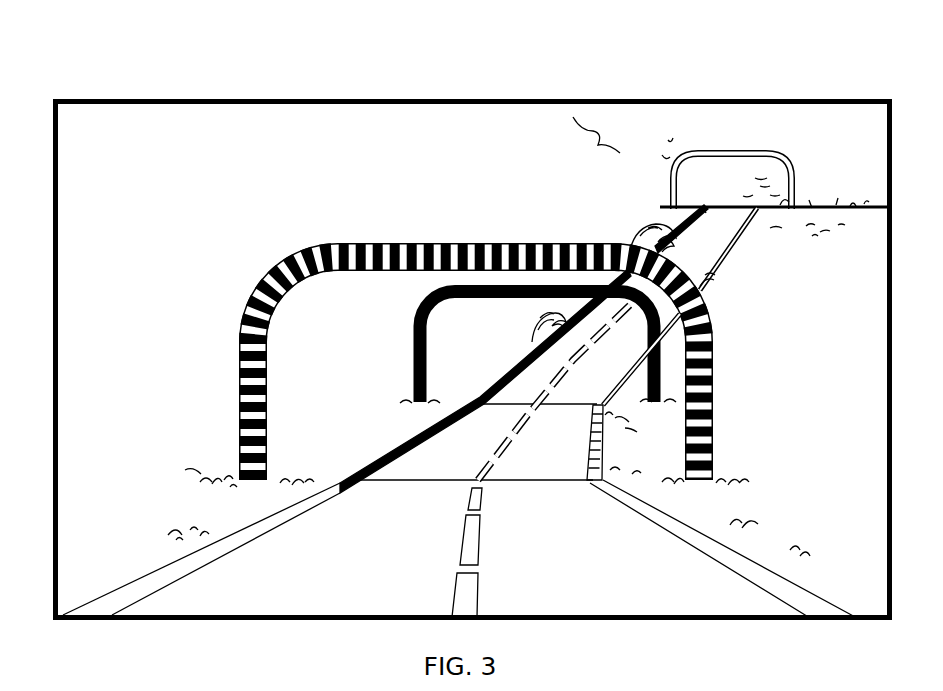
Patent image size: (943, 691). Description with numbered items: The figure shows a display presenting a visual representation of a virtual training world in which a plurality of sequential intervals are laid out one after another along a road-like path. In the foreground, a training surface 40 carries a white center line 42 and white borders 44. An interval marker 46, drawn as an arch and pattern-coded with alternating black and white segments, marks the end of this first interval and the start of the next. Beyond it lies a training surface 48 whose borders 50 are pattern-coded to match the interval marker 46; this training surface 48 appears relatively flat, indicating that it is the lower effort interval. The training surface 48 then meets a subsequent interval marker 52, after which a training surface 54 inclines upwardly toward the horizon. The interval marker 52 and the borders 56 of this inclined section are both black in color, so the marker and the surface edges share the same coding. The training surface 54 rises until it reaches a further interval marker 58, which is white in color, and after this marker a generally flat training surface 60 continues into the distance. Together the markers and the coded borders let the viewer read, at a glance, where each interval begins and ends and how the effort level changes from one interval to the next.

The training surface 40 is at (188, 600).
The white center line 42 is at (450, 593).
The white borders 44 is at (113, 600).
The interval marker 46 is at (383, 243).
The training surface 48 is at (473, 450).
The borders 50 is at (430, 448).
The interval marker 52 is at (543, 281).
The training surface 54 is at (727, 148).
The borders 56 is at (567, 320).
The interval marker 58 is at (592, 327).
The training surface 60 is at (803, 207).